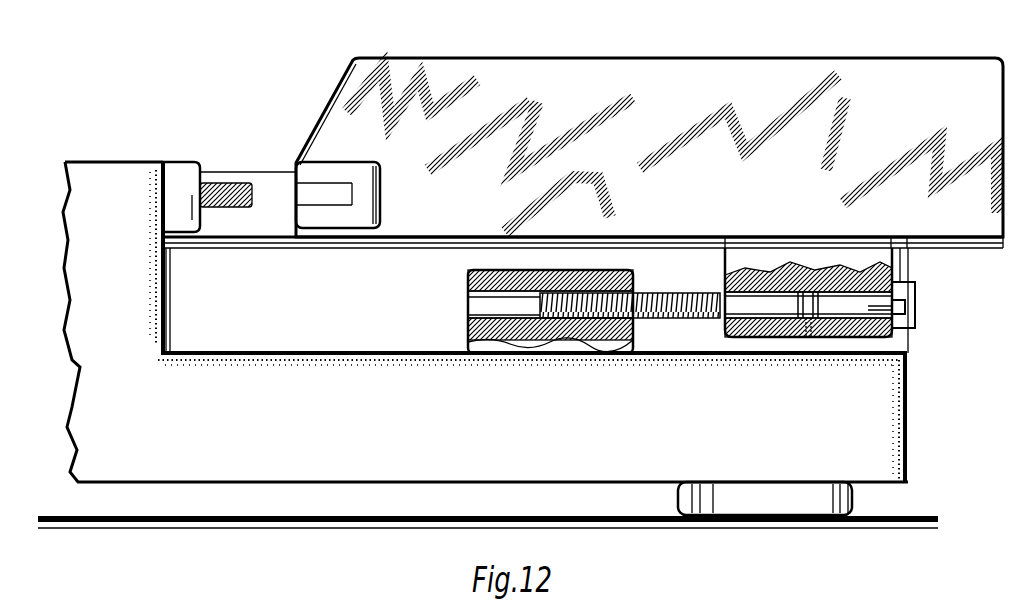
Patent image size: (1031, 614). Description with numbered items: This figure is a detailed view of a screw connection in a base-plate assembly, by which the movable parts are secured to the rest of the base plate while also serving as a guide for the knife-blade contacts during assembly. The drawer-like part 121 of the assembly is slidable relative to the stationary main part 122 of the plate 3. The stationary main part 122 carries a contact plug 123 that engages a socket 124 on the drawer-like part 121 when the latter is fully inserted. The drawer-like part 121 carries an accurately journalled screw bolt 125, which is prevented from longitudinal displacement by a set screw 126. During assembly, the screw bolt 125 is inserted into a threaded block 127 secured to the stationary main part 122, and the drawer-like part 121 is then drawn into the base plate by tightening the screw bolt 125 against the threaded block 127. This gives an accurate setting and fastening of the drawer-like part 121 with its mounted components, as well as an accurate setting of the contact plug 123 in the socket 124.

The plate 3 is at (83, 262).
The drawer-like part 121 is at (567, 70).
The stationary main part 122 is at (873, 372).
The contact plug 123 is at (220, 195).
The socket 124 is at (305, 172).
The screw bolt 125 is at (905, 308).
The set screw 126 is at (863, 338).
The threaded block 127 is at (468, 278).